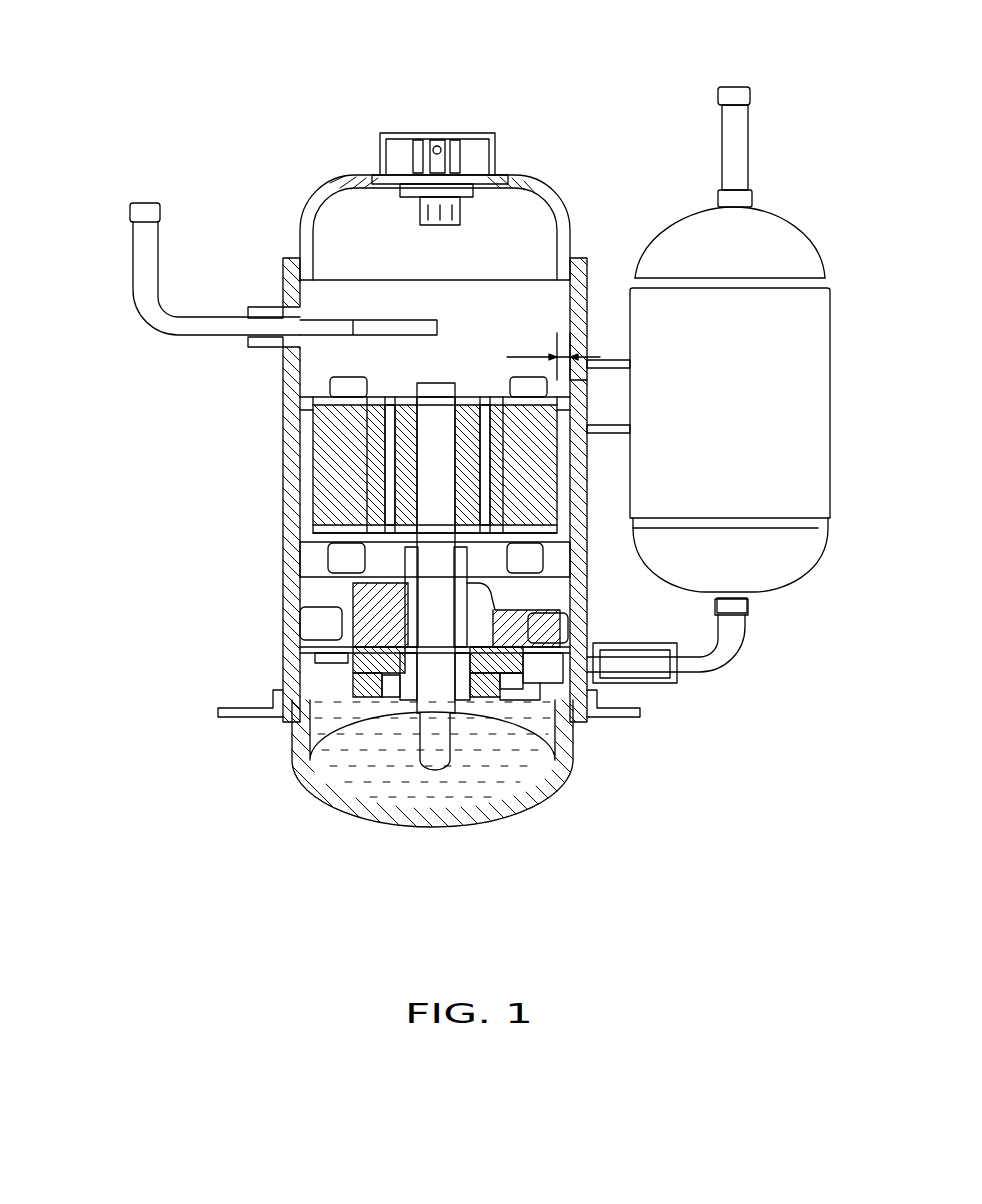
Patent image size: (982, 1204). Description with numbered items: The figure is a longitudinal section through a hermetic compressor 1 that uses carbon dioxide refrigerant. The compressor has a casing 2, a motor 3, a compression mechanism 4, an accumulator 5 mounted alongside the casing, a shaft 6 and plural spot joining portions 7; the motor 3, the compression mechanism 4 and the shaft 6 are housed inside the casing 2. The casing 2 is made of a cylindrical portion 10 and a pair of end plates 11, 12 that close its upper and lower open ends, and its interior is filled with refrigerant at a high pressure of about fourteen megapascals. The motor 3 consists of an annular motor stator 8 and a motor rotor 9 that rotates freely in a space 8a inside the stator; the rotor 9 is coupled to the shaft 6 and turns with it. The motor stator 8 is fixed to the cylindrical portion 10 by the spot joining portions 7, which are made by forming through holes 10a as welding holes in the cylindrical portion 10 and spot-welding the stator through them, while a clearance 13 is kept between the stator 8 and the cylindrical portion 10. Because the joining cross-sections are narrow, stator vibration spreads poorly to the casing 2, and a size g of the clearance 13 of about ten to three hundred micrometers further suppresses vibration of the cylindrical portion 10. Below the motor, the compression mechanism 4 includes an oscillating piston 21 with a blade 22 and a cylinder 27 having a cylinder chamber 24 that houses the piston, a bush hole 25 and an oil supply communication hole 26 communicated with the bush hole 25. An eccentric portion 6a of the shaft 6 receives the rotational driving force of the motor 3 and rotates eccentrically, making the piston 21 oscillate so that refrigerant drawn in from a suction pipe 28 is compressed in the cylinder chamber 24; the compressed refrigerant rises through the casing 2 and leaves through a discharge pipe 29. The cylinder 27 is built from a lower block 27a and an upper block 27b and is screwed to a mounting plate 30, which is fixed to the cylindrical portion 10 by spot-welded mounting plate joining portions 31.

The hermetic compressor 1 is at (560, 98).
The casing 2 is at (258, 243).
The motor 3 is at (330, 92).
The compression mechanism 4 is at (312, 594).
The accumulator 5 is at (798, 216).
The shaft 6 is at (438, 422).
The eccentric portion 6a is at (433, 660).
The spot joining portions 7 is at (283, 425).
The motor stator 8 is at (340, 425).
The space 8a is at (307, 527).
The motor rotor 9 is at (403, 423).
The cylindrical portion 10 is at (293, 385).
The through holes 10a is at (290, 422).
The end plate 11 is at (533, 192).
The end plate 12 is at (510, 810).
The clearance 13 is at (583, 387).
The oscillating piston 21 is at (300, 608).
The blade 22 is at (482, 658).
The cylinder chamber 24 is at (400, 693).
The bush hole 25 is at (480, 652).
The oil supply communication hole 26 is at (485, 665).
The cylinder 27 is at (282, 643).
The lower block 27a is at (419, 660).
The upper block 27b is at (426, 685).
The suction pipe 28 is at (710, 668).
The discharge pipe 29 is at (165, 325).
The mounting plate 30 is at (290, 640).
The mounting plate joining portions 31 is at (293, 617).
The size of the clearance g is at (553, 354).